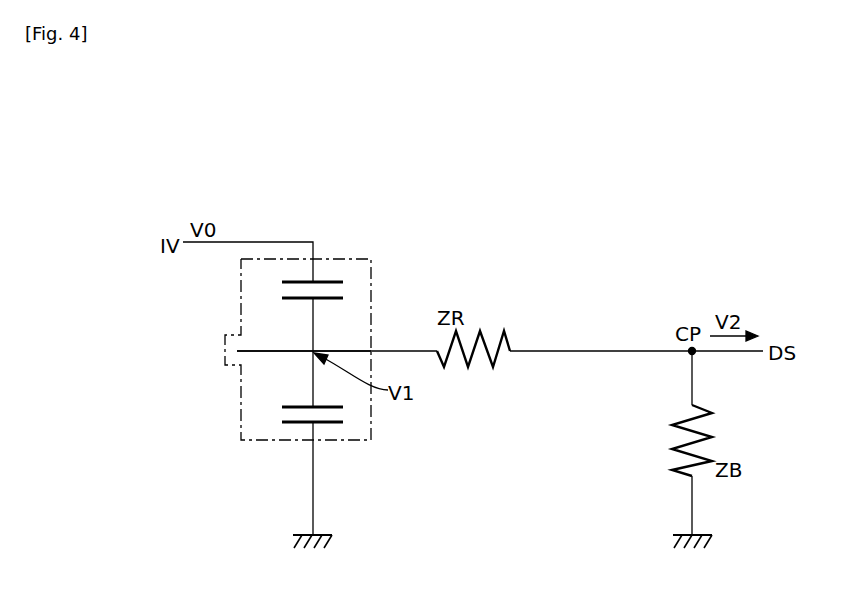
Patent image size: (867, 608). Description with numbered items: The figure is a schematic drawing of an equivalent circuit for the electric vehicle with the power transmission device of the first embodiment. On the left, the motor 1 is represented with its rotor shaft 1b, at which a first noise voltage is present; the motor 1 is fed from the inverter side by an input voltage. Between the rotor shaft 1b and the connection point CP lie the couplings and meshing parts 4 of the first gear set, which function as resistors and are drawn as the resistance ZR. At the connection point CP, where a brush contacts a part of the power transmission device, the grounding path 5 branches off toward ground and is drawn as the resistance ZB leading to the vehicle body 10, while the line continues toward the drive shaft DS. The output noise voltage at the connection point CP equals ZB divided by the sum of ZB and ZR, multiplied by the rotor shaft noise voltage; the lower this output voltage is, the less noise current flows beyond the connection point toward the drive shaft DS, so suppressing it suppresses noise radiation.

The motor 1 is at (232, 414).
The rotor shaft 1b is at (350, 350).
The meshing parts 4 is at (475, 378).
The grounding path 5 is at (732, 433).
The body 10 is at (325, 533).